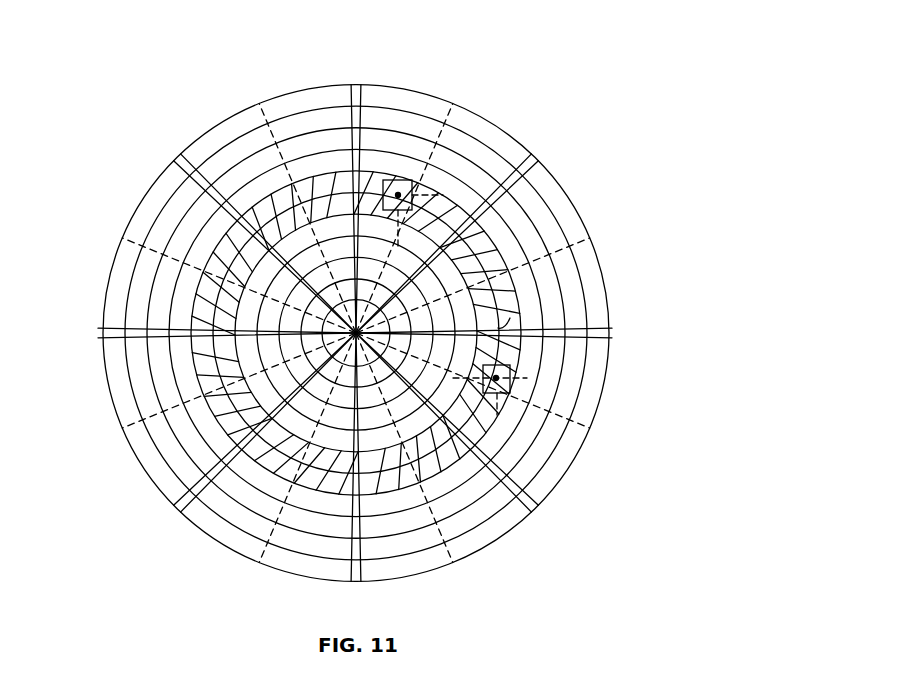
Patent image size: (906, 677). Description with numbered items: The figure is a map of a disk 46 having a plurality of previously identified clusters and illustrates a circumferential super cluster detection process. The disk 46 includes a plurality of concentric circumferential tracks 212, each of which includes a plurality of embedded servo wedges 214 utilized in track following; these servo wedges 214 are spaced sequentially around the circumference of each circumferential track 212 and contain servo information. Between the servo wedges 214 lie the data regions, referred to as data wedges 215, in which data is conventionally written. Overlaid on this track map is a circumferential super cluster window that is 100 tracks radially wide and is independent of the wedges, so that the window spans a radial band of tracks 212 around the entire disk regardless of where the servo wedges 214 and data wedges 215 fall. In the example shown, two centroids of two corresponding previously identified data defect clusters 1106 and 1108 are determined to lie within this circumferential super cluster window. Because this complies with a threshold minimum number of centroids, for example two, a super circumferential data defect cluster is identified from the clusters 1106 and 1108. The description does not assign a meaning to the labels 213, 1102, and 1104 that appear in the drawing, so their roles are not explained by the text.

The disk 46 is at (198, 58).
The circumferential track 212 is at (145, 237).
The tracks 213 is at (424, 124).
The servo wedge 214 is at (358, 86).
The data wedge 215 is at (318, 92).
The first zone 1102 is at (535, 189).
The second zone 1104 is at (490, 226).
The data defect cluster 1106 is at (403, 190).
The data defect cluster 1108 is at (512, 386).
The 100 tracks wide region 100 is at (500, 327).